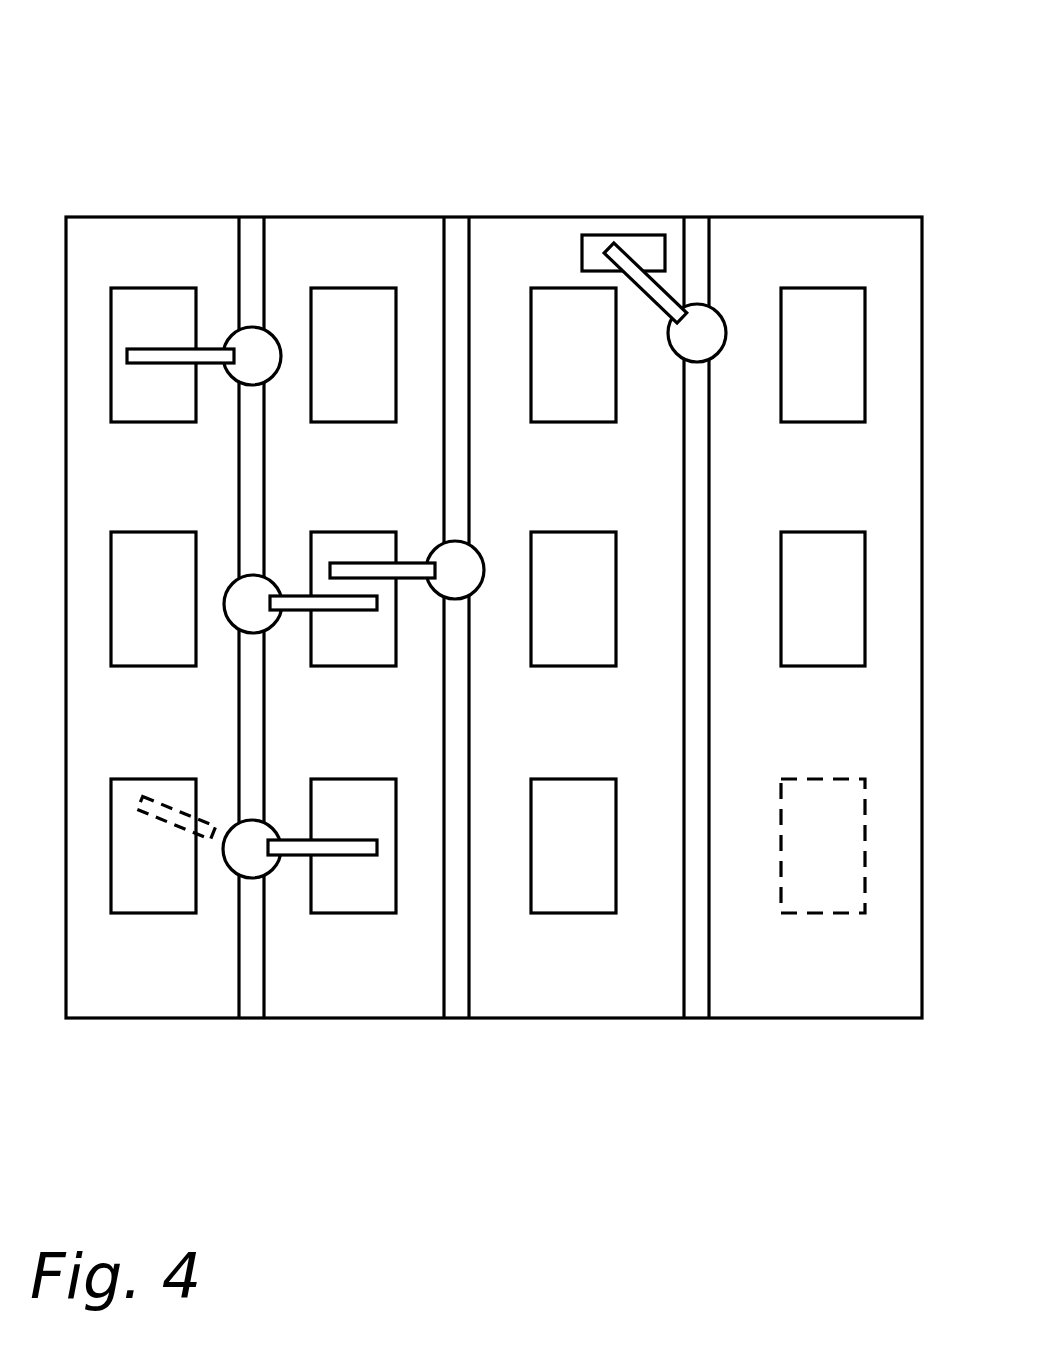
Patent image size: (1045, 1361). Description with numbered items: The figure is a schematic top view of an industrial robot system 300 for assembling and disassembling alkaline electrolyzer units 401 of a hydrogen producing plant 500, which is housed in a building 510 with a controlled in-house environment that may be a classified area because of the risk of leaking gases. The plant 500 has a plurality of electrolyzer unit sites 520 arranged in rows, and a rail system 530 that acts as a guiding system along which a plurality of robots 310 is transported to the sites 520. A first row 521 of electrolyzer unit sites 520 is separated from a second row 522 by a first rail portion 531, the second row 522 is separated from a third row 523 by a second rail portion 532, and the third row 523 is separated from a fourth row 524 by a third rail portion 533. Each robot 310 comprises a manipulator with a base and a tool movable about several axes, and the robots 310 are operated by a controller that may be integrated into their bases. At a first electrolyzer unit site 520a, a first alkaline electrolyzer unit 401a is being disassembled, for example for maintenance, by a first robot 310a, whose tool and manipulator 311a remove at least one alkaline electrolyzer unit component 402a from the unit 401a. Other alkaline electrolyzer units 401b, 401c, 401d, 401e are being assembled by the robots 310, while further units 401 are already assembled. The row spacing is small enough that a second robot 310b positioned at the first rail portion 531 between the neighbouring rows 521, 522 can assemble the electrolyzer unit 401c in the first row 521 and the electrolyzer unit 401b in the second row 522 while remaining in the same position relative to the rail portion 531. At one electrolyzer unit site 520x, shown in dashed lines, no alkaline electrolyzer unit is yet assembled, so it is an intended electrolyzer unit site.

The industrial robot system 300 is at (137, 108).
The hydrogen producing plant 500 is at (828, 110).
The building 510 is at (855, 220).
The electrolyzer unit sites 520 is at (860, 955).
The first row 521 is at (144, 1048).
The second row 522 is at (343, 1053).
The third row 523 is at (563, 1058).
The fourth row 524 is at (792, 1058).
The rail system 530 is at (433, 247).
The first rail portion 531 is at (251, 1027).
The second rail portion 532 is at (453, 1027).
The third rail portion 533 is at (695, 1027).
The robots 310 is at (218, 268).
The first robot 310a is at (722, 280).
The second robot 310b is at (224, 888).
The tool and manipulator 311a is at (612, 252).
The alkaline electrolyzer units 401 is at (128, 265).
The first alkaline electrolyzer unit 401a is at (604, 364).
The alkaline electrolyzer unit 401b is at (385, 895).
The alkaline electrolyzer unit 401c is at (188, 895).
The alkaline electrolyzer unit 401d is at (385, 650).
The alkaline electrolyzer unit 401e is at (184, 408).
The alkaline electrolyzer unit component 402a is at (593, 238).
The first electrolyzer unit site 520a is at (547, 280).
The electrolyzer unit site 520x is at (851, 882).